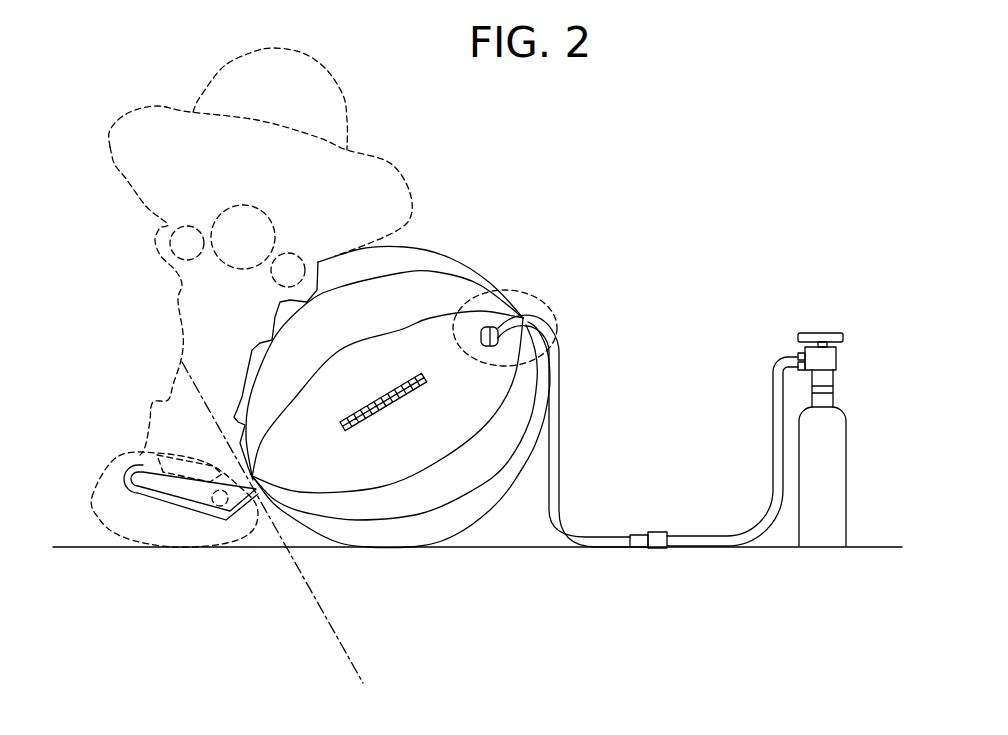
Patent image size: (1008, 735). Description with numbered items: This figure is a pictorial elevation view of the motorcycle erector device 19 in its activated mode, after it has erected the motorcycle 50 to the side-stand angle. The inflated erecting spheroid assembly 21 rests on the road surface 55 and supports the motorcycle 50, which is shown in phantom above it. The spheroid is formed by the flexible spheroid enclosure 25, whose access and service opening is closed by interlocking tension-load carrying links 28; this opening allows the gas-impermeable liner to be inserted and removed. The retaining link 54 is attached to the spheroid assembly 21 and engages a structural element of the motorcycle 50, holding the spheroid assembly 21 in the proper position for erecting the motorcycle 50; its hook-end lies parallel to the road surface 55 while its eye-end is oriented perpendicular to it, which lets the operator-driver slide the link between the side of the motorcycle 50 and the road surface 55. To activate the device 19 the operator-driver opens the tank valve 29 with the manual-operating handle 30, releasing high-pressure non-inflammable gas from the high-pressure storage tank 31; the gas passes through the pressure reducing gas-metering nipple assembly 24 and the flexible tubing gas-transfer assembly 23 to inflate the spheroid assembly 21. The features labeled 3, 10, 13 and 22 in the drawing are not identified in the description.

The foot of user 3 is at (115, 457).
The valve assembly 10 is at (557, 297).
The section line 13 is at (182, 362).
The motorcycle erector device 19 is at (503, 567).
The erecting spheroid assembly 21 is at (462, 248).
The supply tube 22 is at (580, 352).
The flexible tubing gas-transfer assembly 23 is at (680, 518).
The pressure reducing gas-metering nipple assembly 24 is at (783, 347).
The flexible spheroid enclosure 25 is at (483, 277).
The interlocking tension-load carrying links 28 is at (377, 420).
The tank valve 29 is at (837, 367).
The manual-operating handle 30 is at (823, 332).
The high pressure storage tank 31 is at (846, 493).
The motorcycle 50 is at (358, 100).
The retaining link 54 is at (163, 502).
The road surface 55 is at (538, 547).